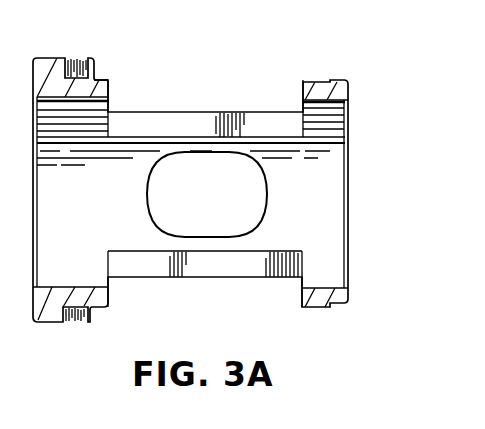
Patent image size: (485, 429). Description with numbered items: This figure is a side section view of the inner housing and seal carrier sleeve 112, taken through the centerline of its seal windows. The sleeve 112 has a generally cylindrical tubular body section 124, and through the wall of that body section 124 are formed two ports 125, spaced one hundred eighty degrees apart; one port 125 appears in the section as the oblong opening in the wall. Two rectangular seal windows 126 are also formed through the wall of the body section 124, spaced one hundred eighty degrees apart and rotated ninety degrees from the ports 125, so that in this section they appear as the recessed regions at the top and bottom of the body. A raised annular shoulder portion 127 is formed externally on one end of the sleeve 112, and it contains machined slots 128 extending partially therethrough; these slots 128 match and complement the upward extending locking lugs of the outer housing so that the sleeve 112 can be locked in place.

The inner housing and seal carrier sleeve 112 is at (198, 99).
The tubular body section 124 is at (108, 80).
The port 125 is at (203, 153).
The seal window 126 is at (112, 107).
The raised annular shoulder portion 127 is at (48, 58).
The machined slot 128 is at (83, 68).